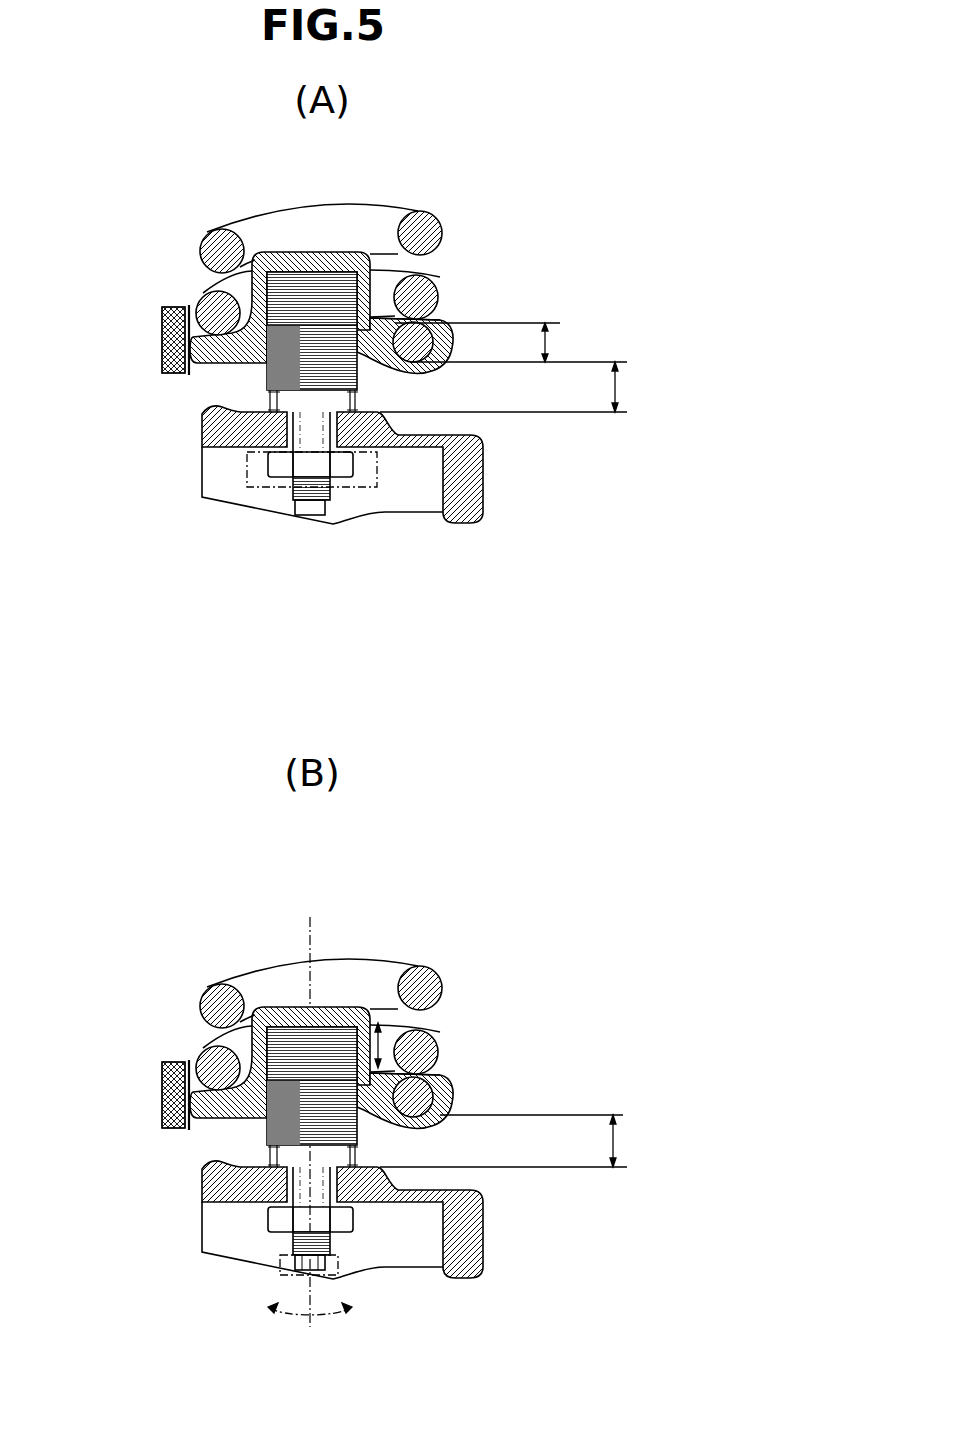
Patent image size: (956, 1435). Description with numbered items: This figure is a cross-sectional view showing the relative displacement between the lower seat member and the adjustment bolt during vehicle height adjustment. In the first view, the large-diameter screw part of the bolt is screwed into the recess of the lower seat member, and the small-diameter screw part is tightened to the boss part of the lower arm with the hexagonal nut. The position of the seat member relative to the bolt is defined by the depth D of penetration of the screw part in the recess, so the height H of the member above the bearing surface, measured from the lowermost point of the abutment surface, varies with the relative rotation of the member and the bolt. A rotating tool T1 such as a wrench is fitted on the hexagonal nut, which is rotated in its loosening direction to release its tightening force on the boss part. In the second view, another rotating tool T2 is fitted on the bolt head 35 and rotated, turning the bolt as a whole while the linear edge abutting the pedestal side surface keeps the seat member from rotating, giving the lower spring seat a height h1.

The bolt head 35 is at (227, 1282).
The rotating tool T1 is at (357, 487).
The rotating tool T2 is at (369, 1294).
The depth of penetration D is at (511, 343).
The height of the lower seat member H is at (511, 387).
The height of the lower spring seat h1 is at (518, 1141).